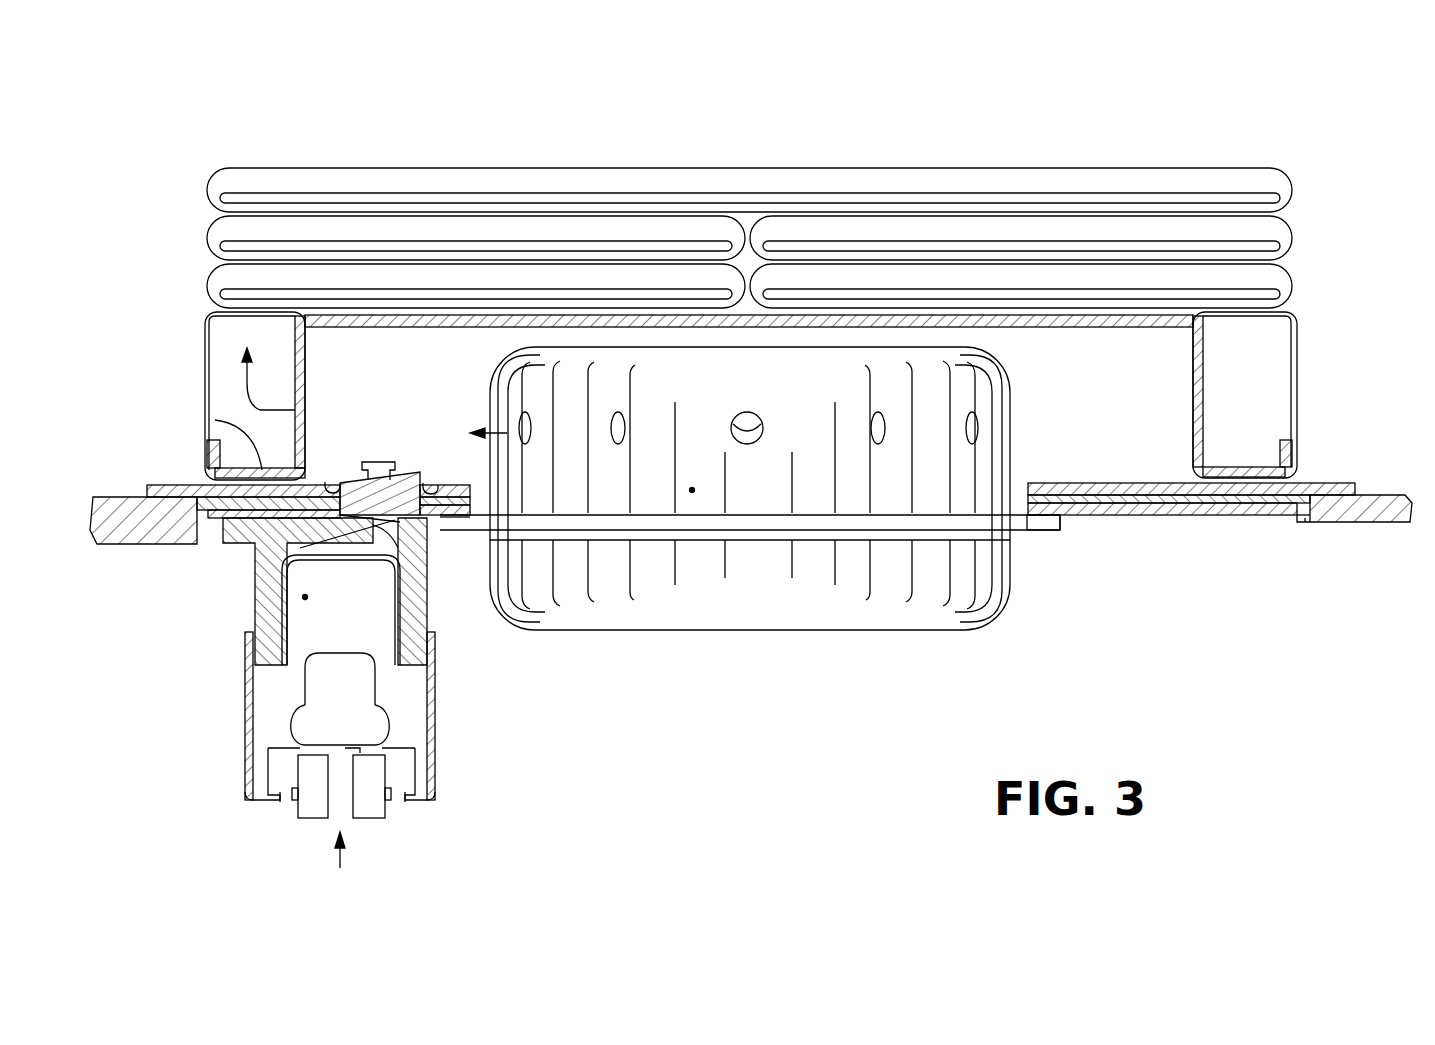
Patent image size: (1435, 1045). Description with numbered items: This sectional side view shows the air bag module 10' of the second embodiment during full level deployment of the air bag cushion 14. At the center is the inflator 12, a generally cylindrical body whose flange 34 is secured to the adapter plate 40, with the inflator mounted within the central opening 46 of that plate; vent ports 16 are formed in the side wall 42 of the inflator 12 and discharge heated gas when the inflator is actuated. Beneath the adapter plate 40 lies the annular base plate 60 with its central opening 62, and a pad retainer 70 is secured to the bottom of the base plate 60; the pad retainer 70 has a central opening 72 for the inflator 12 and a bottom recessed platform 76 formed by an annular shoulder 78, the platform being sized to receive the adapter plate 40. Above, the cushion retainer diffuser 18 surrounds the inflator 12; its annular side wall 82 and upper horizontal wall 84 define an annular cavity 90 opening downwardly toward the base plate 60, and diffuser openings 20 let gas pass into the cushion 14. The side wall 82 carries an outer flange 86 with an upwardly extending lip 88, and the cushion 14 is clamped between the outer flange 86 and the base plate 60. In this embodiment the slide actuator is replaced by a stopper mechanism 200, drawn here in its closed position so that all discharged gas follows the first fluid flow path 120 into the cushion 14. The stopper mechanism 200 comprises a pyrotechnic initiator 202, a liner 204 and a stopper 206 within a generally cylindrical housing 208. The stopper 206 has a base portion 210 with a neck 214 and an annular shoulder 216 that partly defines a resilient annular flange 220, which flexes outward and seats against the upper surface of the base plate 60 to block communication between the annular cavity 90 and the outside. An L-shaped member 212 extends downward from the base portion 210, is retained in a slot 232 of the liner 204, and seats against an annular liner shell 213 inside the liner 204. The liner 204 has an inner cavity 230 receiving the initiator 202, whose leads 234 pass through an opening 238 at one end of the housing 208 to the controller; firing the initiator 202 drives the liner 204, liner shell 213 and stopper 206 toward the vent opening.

The air bag module 10' is at (713, 73).
The air bag cushion 14 is at (846, 197).
The annular cavity 90 is at (1072, 372).
The upper horizontal wall 84 is at (478, 322).
The annular side wall 82 is at (302, 330).
The diffuser openings 20 is at (296, 400).
The cushion retainer diffuser 18 is at (1195, 325).
The upwardly extending lip 88 is at (213, 445).
The first fluid flow path 120 is at (243, 376).
The outer flange 86 is at (215, 420).
The central opening 62 is at (1025, 486).
The adapter plate 40 is at (1236, 512).
The pad retainer 70 is at (1392, 512).
The annular base plate 60 is at (1338, 488).
The bottom recessed platform 76 is at (1300, 515).
The annular shoulder 78 is at (1308, 520).
The central opening 46 is at (1023, 522).
The base portion 210 is at (342, 483).
The annular flange 220 is at (332, 483).
The stopper 206 is at (395, 445).
The annular shoulder 216 is at (329, 482).
The neck 214 is at (470, 416).
The central opening 72 is at (468, 506).
The liner 204 is at (267, 597).
The slot 232 is at (382, 532).
The L-shaped member 212 is at (361, 540).
The annular liner shell 213 is at (287, 612).
The inner cavity 230 is at (305, 597).
The housing 208 is at (250, 684).
The pyrotechnic initiator 202 is at (318, 722).
The opening 238 is at (281, 802).
The leads 234 is at (370, 810).
The stopper mechanism 200 is at (346, 867).
The inflator 12 is at (738, 521).
The flange 34 is at (482, 525).
The vent ports 16 is at (763, 421).
The side wall 42 is at (692, 490).